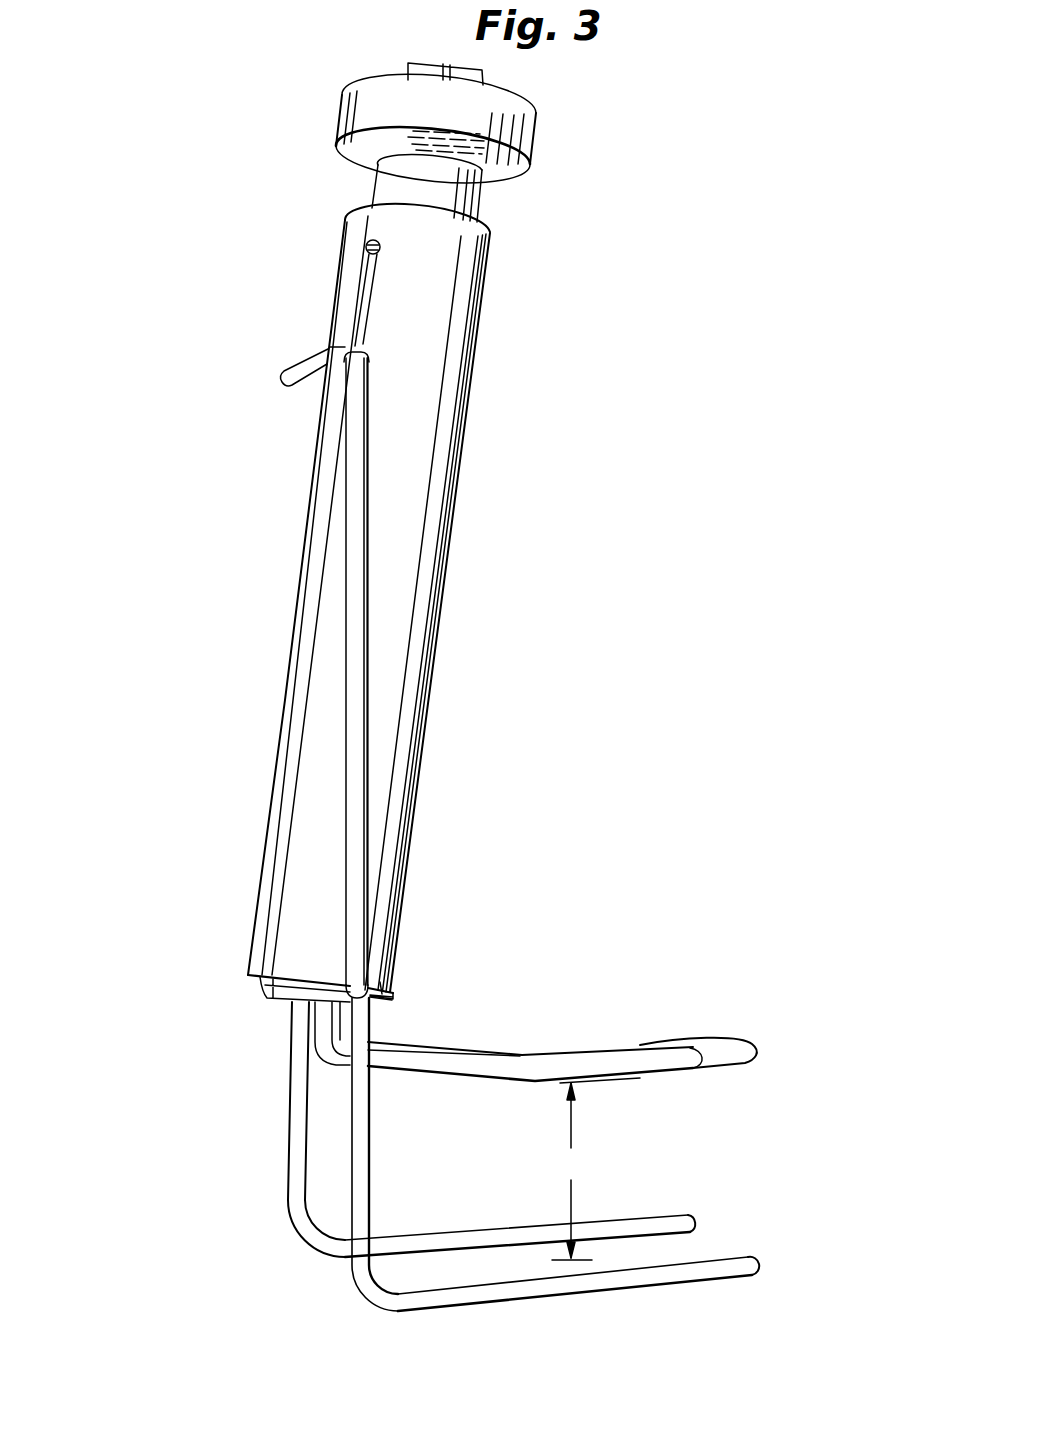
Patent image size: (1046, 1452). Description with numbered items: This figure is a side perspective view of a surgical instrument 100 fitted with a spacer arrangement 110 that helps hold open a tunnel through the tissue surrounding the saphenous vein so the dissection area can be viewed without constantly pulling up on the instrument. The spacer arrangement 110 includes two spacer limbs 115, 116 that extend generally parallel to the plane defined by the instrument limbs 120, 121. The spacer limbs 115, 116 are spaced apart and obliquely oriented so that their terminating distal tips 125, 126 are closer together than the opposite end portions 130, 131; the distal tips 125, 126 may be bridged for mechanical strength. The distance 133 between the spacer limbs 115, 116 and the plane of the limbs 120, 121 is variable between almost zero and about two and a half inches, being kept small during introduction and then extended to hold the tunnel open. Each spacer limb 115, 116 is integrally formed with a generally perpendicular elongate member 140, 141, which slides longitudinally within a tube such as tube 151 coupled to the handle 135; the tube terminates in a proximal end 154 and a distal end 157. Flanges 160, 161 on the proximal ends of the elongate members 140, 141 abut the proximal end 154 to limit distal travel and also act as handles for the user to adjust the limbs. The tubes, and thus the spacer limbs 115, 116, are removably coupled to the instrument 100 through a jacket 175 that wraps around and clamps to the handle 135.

The surgical instrument 100 is at (515, 327).
The spacer arrangement 110 is at (283, 1095).
The spacer limb 115 is at (590, 1217).
The spacer limb 116 is at (507, 1293).
The limb 120 is at (590, 1047).
The limb 121 is at (627, 1073).
The distal tip 125 is at (693, 1222).
The distal tip 126 is at (753, 1263).
The end portion 130 is at (295, 1237).
The end portion 131 is at (360, 1295).
The distance 133 is at (570, 1171).
The handle 135 is at (487, 212).
The elongate member 140 is at (297, 1022).
The elongate member 141 is at (348, 1132).
The tube 151 is at (367, 580).
The proximal end 154 is at (372, 333).
The distal end 157 is at (387, 978).
The flange 160 is at (297, 372).
The flange 161 is at (358, 298).
The jacket 175 is at (430, 697).